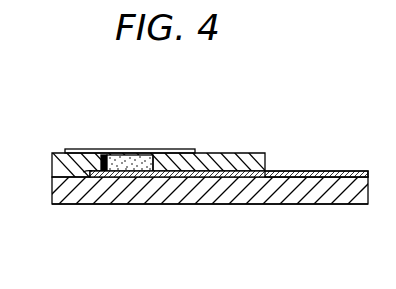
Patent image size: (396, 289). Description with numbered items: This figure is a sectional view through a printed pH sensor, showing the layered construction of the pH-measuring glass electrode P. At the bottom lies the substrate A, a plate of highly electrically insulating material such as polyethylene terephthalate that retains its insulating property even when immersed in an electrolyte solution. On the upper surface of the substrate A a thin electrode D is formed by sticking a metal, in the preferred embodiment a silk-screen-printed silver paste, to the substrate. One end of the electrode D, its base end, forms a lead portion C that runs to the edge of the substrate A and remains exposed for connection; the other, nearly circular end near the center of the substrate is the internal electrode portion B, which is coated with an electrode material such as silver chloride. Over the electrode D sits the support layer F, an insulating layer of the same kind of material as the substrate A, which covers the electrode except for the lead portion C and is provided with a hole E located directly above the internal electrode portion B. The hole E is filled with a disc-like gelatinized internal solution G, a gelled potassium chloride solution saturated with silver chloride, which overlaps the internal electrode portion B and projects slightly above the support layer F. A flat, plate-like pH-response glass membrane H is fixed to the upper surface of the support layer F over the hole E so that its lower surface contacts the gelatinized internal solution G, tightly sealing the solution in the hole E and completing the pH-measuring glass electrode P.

The substrate A is at (130, 198).
The internal electrode portion B is at (83, 173).
The lead portion C is at (287, 170).
The electrode D is at (178, 177).
The hole E is at (105, 155).
The support layer F is at (203, 158).
The gelatinized internal solution G is at (120, 157).
The pH-response glass membrane H is at (80, 150).
The pH-measuring glass electrode P is at (238, 212).